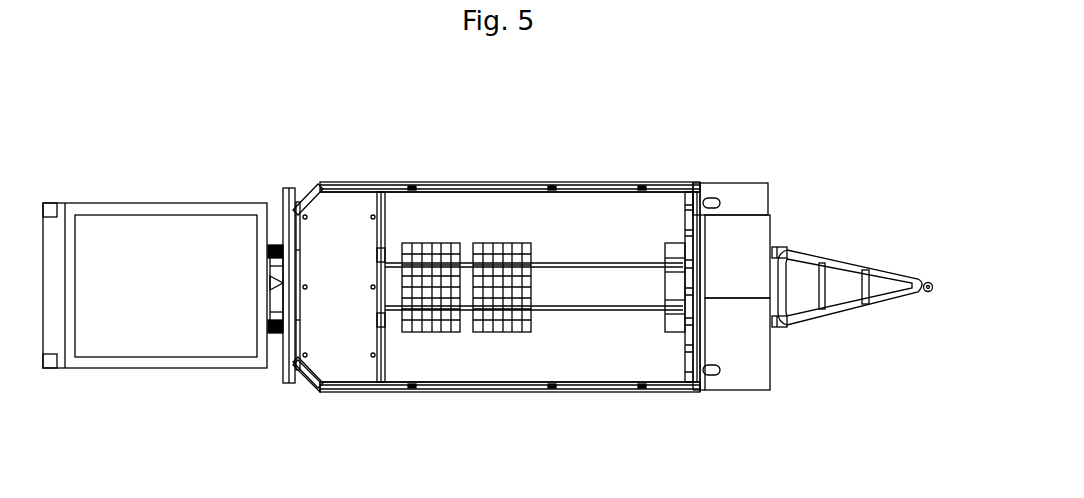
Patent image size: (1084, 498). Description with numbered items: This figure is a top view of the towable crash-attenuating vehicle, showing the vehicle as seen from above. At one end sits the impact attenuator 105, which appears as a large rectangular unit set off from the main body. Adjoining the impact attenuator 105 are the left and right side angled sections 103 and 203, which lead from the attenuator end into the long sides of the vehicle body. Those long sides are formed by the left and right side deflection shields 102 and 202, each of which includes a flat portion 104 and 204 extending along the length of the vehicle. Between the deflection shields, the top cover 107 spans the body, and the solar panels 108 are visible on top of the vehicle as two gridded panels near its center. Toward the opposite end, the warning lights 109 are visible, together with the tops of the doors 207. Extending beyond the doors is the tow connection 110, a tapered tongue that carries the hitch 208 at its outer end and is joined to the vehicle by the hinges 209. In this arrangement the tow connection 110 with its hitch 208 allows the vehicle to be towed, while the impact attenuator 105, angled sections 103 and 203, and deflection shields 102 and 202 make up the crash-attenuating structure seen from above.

The left side deflection shield 102 is at (528, 183).
The left side angled section 103 is at (306, 192).
The flat portion 104 is at (607, 183).
The impact attenuator 105 is at (137, 212).
The top cover 107 is at (338, 232).
The solar panels 108 is at (512, 280).
The warning lights 109 is at (693, 232).
The tow connection 110 is at (870, 268).
The right side deflection shield 202 is at (483, 392).
The right side angled section 203 is at (310, 384).
The flat portion 204 is at (598, 392).
The doors 207 is at (745, 275).
The hitch 208 is at (929, 292).
The hinges 209 is at (788, 248).